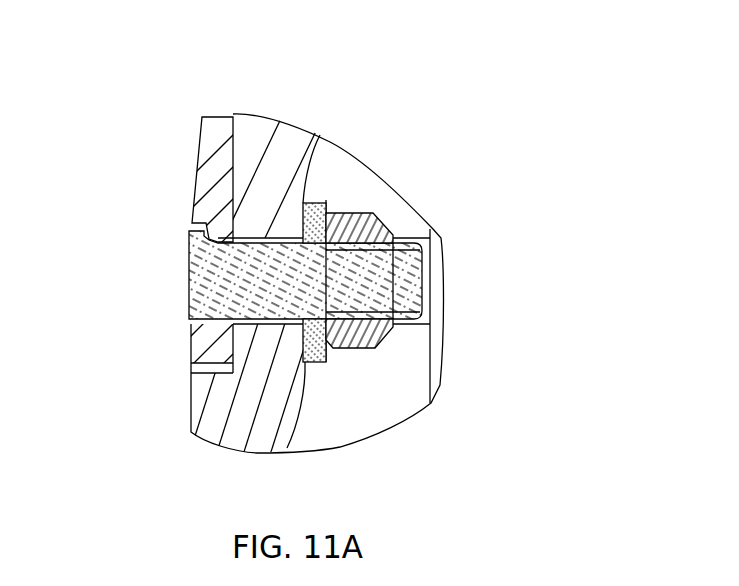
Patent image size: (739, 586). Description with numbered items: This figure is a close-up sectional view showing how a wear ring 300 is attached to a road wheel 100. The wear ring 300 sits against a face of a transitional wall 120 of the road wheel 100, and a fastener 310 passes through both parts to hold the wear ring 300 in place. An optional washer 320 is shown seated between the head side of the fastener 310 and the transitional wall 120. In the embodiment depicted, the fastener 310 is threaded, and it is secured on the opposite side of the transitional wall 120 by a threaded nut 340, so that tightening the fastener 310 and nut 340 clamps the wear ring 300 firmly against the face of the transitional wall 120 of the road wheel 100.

The road wheel 100 is at (412, 99).
The transitional wall 120 is at (262, 140).
The wear ring 300 is at (213, 170).
The fastener 310 is at (213, 295).
The washer 320 is at (318, 212).
The threaded nut 340 is at (333, 346).